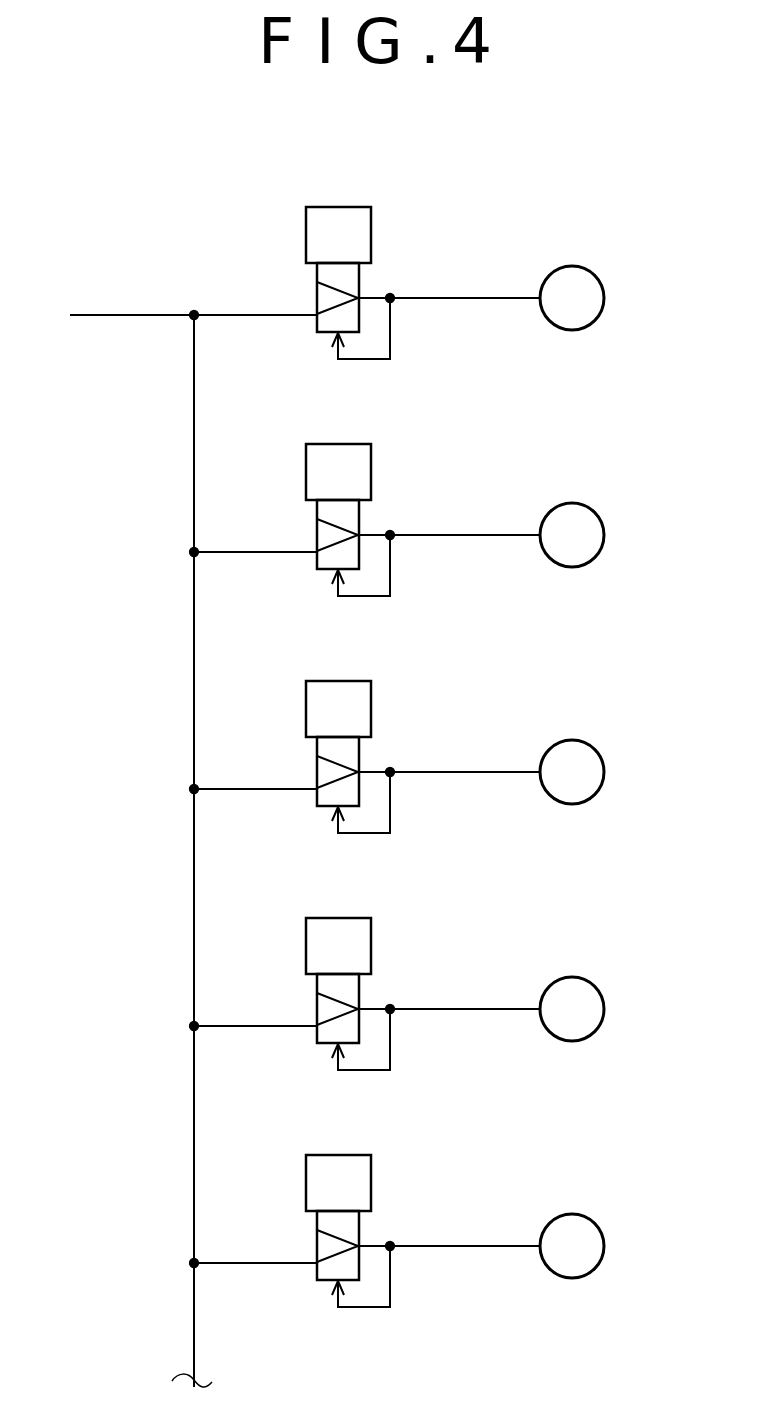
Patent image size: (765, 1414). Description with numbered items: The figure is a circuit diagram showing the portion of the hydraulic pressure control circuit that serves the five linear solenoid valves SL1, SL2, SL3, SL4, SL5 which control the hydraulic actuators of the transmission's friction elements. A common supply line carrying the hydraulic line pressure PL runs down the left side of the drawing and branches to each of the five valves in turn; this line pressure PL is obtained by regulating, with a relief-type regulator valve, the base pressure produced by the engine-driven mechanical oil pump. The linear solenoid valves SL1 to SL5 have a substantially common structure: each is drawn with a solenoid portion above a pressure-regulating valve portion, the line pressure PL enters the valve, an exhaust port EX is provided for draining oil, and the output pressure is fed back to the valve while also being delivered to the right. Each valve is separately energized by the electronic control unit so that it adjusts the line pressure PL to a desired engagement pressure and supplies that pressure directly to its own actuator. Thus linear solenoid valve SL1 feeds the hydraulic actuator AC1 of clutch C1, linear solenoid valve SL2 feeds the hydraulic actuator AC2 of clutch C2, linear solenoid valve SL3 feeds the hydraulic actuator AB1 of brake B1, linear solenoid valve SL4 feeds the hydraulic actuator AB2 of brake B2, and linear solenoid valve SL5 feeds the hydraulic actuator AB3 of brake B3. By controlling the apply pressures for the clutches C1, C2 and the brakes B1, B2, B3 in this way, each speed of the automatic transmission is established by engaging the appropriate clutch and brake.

The hydraulic line pressure PL is at (141, 835).
The exhaust port EX is at (296, 757).
The linear solenoid valve SL1 is at (365, 283).
The linear solenoid valve SL2 is at (365, 520).
The linear solenoid valve SL3 is at (365, 757).
The linear solenoid valve SL4 is at (365, 994).
The linear solenoid valve SL5 is at (365, 1231).
The clutch C1 is at (572, 298).
The clutch C2 is at (572, 535).
The brake B1 is at (572, 772).
The brake B2 is at (572, 1009).
The brake B3 is at (572, 1246).
The hydraulic actuator AC1 is at (596, 278).
The hydraulic actuator AC2 is at (596, 515).
The hydraulic actuator AB1 is at (596, 752).
The hydraulic actuator AB2 is at (596, 989).
The hydraulic actuator AB3 is at (596, 1226).